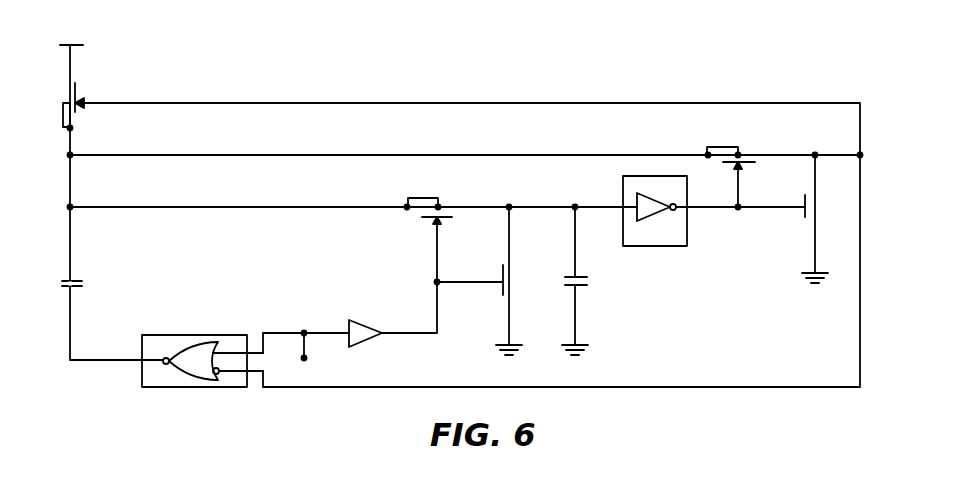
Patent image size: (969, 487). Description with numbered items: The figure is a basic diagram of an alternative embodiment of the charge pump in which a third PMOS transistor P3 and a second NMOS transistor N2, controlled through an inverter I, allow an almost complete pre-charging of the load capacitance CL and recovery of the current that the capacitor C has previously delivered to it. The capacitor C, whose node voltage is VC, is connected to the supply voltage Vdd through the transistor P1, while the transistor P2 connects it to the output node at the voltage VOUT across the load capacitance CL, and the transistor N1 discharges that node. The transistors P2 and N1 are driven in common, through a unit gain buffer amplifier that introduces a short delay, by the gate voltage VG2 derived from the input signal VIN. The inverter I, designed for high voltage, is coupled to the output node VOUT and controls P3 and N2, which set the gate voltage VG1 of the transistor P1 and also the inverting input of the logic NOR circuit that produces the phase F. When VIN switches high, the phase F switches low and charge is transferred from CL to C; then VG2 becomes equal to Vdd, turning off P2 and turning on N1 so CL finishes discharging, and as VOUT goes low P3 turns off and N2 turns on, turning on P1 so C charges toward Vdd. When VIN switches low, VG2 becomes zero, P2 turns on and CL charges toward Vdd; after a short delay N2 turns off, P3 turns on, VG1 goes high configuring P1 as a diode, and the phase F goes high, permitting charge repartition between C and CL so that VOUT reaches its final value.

The supply voltage Vdd is at (66, 34).
The first PMOS transistor P1 is at (85, 99).
The capacitor voltage VC is at (90, 193).
The capacitor C is at (82, 284).
The phase F is at (98, 385).
The input signal VIN is at (319, 358).
The gate voltage of P2 and N1 VG2 is at (457, 316).
The second PMOS transistor P2 is at (423, 228).
The first NMOS transistor N1 is at (479, 280).
The output voltage VOUT is at (546, 193).
The load capacitance CL is at (588, 281).
The driving inverter I is at (655, 226).
The third PMOS transistor P3 is at (726, 178).
The second NMOS transistor N2 is at (802, 218).
The gate voltage of P1 VG1 is at (819, 130).